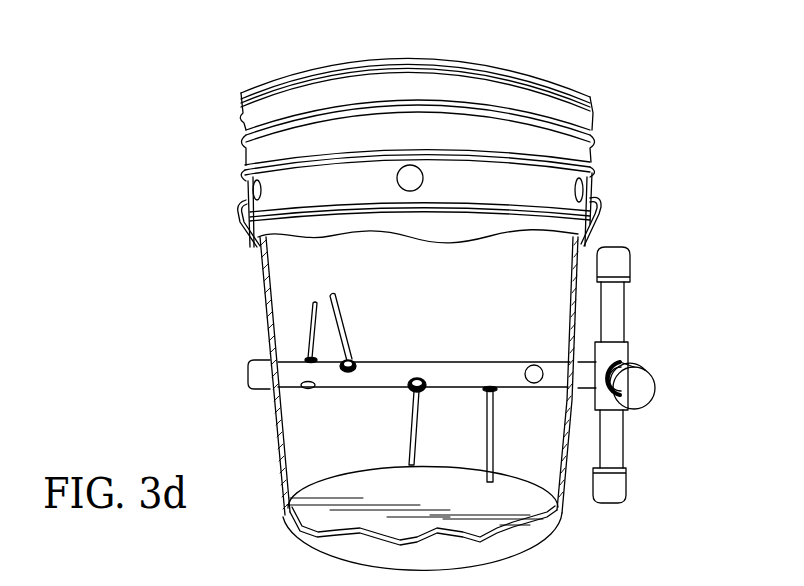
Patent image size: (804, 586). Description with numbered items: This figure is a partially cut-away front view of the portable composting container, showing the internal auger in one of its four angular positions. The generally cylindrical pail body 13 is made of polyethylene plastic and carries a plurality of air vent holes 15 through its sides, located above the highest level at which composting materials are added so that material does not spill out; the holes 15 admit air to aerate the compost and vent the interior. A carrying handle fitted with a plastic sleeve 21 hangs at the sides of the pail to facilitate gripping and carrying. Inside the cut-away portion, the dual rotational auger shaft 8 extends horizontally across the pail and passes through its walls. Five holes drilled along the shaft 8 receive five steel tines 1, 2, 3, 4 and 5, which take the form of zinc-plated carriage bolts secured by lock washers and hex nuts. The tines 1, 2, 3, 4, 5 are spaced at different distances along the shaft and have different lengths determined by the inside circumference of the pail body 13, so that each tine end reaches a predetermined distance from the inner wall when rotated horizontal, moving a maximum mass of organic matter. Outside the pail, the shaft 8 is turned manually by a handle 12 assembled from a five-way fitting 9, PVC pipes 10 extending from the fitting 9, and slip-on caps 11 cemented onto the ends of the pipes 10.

The tine 1 is at (310, 320).
The tine 2 is at (341, 317).
The tine 3 is at (407, 430).
The tine 4 is at (494, 453).
The tine 5 is at (533, 365).
The dual rotational auger shaft 8 is at (438, 378).
The five-way fitting 9 is at (614, 355).
The pipe 10 is at (615, 307).
The slip-on cap 11 is at (247, 379).
The handle 12 is at (653, 373).
The pail body 13 is at (257, 118).
The air vent hole 15 is at (571, 186).
The plastic sleeve 21 is at (243, 217).